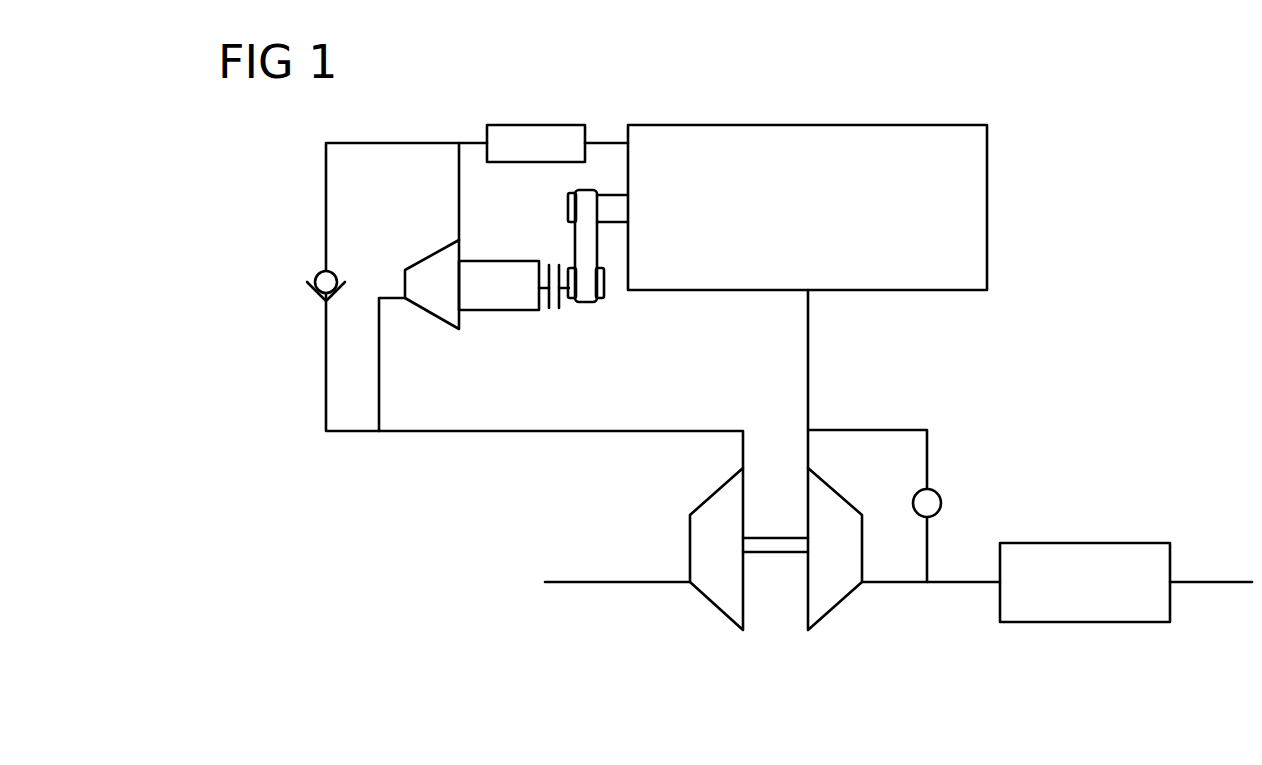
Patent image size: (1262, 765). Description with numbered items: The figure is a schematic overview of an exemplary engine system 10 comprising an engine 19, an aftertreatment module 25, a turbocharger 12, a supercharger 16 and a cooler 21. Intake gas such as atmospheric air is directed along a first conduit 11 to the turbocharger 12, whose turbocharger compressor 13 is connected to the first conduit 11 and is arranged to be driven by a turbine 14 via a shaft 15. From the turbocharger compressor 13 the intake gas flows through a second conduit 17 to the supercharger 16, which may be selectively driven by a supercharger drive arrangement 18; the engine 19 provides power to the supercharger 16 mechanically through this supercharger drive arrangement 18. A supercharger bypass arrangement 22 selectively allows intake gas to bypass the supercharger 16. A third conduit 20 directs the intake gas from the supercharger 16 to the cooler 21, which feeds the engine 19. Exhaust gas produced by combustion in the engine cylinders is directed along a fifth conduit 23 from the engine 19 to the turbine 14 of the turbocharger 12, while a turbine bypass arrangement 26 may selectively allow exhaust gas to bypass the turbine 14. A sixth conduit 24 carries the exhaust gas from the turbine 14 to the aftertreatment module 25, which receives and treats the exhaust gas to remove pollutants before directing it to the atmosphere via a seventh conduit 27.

The engine system 10 is at (1183, 341).
The first conduit 11 is at (582, 585).
The turbocharger 12 is at (775, 601).
The turbocharger compressor 13 is at (712, 600).
The turbine 14 is at (845, 600).
The shaft 15 is at (777, 555).
The supercharger 16 is at (434, 322).
The second conduit 17 is at (693, 430).
The supercharger drive arrangement 18 is at (584, 316).
The engine 19 is at (928, 125).
The third conduit 20 is at (603, 143).
The cooler 21 is at (535, 125).
The supercharger bypass arrangement 22 is at (300, 241).
The fifth conduit 23 is at (808, 347).
The sixth conduit 24 is at (968, 585).
The aftertreatment module 25 is at (1092, 543).
The turbine bypass arrangement 26 is at (950, 443).
The seventh conduit 27 is at (1205, 582).